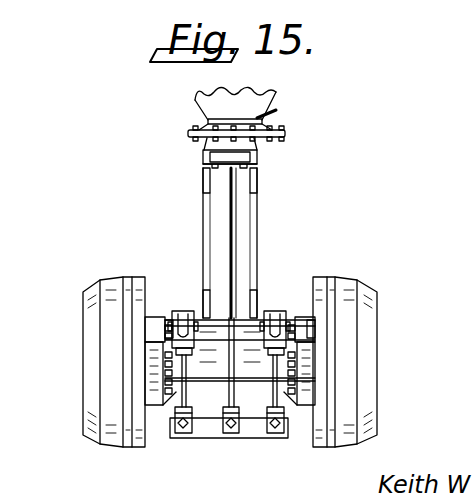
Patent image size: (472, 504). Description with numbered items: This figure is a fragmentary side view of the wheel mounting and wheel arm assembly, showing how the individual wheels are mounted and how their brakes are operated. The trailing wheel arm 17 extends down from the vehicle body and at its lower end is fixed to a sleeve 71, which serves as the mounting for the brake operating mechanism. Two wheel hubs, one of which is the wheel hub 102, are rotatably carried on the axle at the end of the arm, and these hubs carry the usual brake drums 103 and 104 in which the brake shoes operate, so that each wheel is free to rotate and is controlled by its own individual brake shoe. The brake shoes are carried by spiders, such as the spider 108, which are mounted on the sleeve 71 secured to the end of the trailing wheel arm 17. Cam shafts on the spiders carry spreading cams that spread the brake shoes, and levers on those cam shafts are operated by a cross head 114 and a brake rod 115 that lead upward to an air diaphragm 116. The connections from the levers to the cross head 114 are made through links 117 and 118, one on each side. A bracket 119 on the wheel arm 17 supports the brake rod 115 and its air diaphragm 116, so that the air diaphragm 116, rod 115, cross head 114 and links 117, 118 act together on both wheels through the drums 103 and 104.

The trailing wheel arm 17 is at (210, 242).
The sleeve 71 is at (242, 360).
The wheel hub 102 is at (148, 368).
The brake drum 103 is at (92, 330).
The brake drum 104 is at (375, 328).
The spider 108 is at (307, 393).
The cross head 114 is at (209, 433).
The brake rod 115 is at (233, 217).
The air diaphragm 116 is at (253, 119).
The link 117 is at (175, 402).
The link 118 is at (284, 402).
The bracket 119 is at (205, 182).